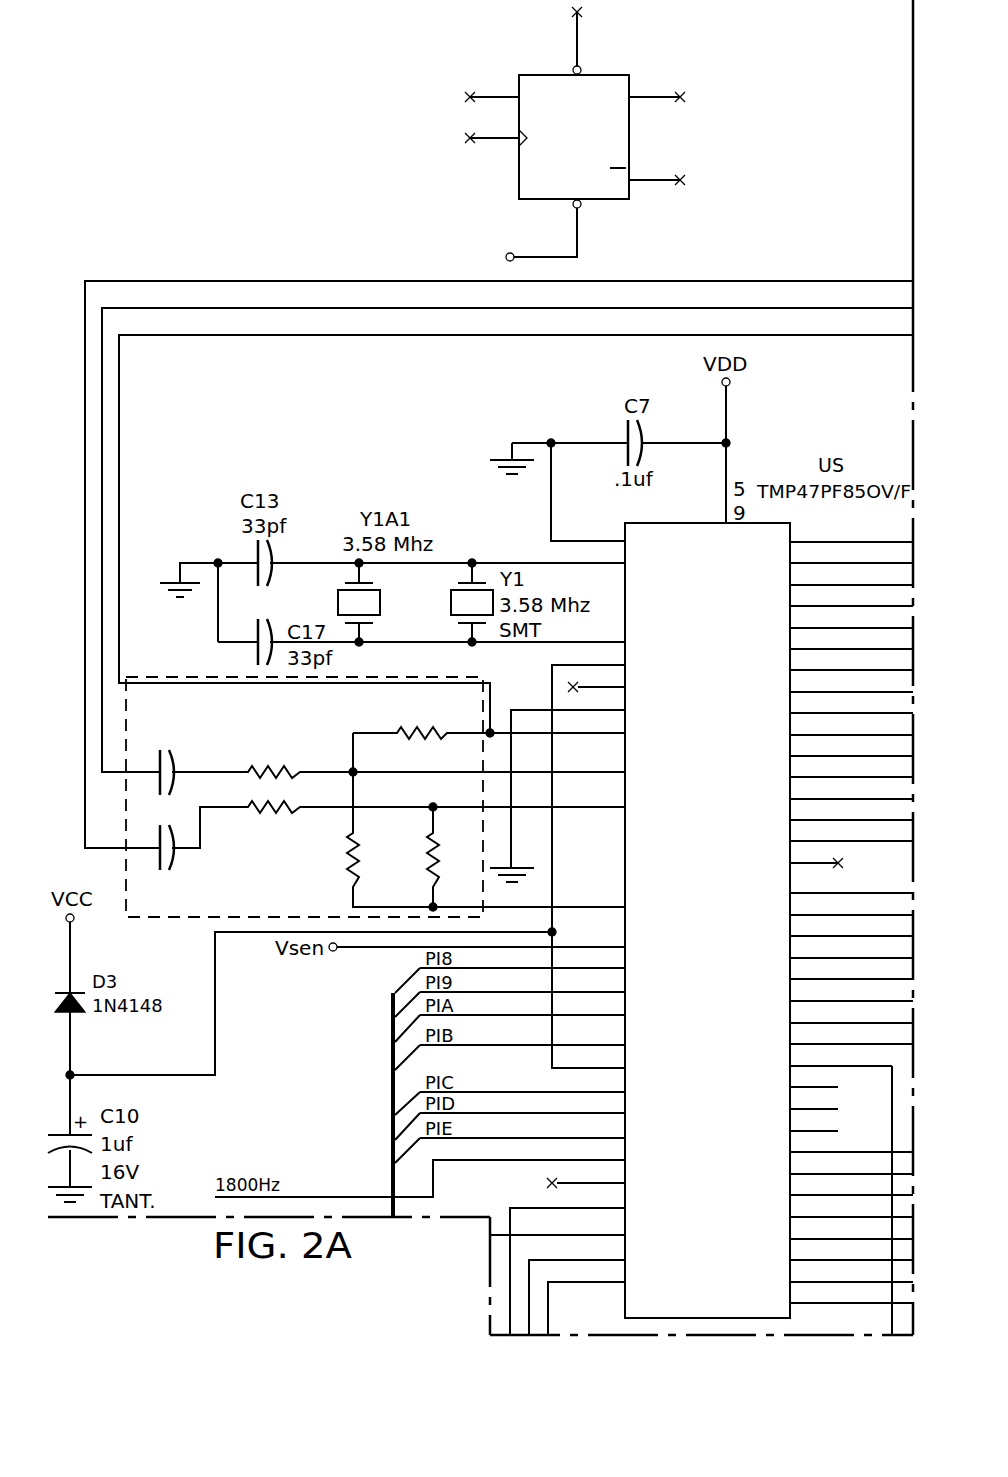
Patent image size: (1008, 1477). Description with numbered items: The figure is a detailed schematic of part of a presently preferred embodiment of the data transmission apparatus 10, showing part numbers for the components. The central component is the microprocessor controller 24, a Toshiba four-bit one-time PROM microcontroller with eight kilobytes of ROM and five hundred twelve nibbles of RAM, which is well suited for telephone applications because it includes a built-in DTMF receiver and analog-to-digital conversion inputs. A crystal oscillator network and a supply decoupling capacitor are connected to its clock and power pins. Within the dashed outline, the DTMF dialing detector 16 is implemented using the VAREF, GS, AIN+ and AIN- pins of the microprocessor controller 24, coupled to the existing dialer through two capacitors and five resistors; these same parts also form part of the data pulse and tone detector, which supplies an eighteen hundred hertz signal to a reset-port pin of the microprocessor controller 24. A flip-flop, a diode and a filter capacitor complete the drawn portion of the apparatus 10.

The data transmission apparatus 10 is at (358, 199).
The DTMF dialing detector 16 is at (126, 880).
The microprocessor controller 24 is at (714, 864).